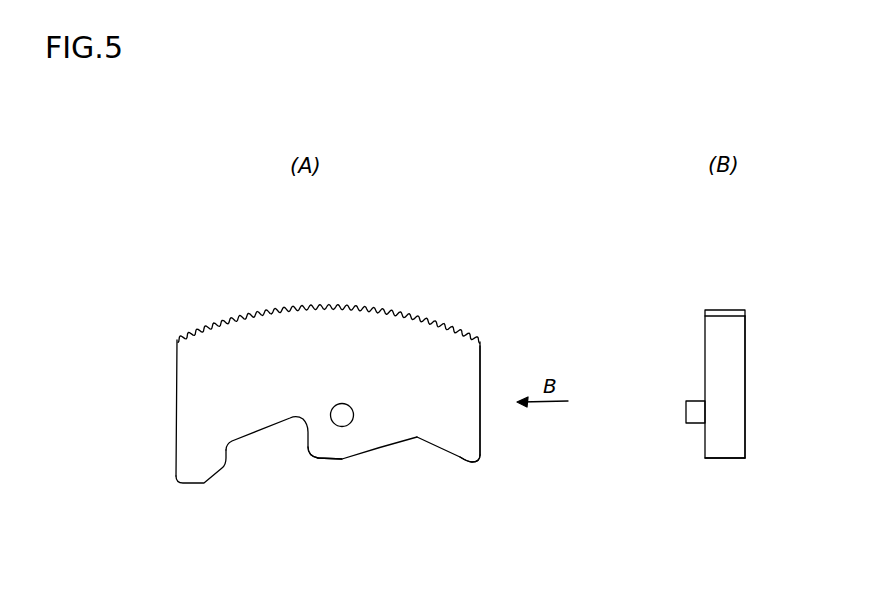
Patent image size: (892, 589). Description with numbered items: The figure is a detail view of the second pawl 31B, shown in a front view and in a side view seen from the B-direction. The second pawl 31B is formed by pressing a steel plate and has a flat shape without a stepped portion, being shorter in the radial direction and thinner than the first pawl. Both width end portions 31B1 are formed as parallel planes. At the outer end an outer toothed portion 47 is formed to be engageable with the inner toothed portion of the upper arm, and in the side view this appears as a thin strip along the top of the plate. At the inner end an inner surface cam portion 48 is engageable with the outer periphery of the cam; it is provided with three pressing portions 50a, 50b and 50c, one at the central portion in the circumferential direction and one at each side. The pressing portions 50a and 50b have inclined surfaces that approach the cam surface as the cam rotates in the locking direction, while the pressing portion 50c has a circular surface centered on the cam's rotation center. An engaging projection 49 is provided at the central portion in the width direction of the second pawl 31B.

The second pawl 31B is at (358, 299).
The outer toothed portion 47 is at (280, 312).
The width end portion 31B1 is at (175, 382).
The engaging projection 49 is at (350, 423).
The inner surface cam portion 48 is at (347, 459).
The pressing portion 50a is at (327, 462).
The pressing portion 50b is at (193, 485).
The pressing portion 50c is at (467, 462).